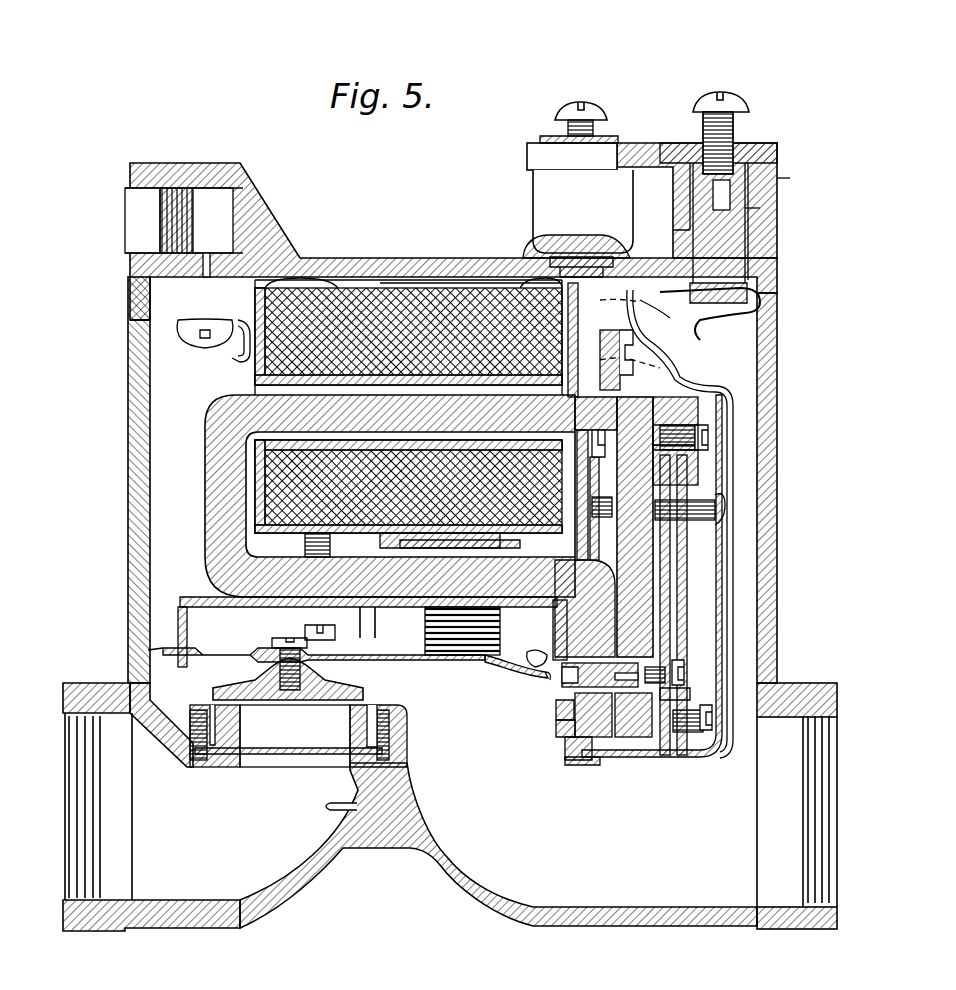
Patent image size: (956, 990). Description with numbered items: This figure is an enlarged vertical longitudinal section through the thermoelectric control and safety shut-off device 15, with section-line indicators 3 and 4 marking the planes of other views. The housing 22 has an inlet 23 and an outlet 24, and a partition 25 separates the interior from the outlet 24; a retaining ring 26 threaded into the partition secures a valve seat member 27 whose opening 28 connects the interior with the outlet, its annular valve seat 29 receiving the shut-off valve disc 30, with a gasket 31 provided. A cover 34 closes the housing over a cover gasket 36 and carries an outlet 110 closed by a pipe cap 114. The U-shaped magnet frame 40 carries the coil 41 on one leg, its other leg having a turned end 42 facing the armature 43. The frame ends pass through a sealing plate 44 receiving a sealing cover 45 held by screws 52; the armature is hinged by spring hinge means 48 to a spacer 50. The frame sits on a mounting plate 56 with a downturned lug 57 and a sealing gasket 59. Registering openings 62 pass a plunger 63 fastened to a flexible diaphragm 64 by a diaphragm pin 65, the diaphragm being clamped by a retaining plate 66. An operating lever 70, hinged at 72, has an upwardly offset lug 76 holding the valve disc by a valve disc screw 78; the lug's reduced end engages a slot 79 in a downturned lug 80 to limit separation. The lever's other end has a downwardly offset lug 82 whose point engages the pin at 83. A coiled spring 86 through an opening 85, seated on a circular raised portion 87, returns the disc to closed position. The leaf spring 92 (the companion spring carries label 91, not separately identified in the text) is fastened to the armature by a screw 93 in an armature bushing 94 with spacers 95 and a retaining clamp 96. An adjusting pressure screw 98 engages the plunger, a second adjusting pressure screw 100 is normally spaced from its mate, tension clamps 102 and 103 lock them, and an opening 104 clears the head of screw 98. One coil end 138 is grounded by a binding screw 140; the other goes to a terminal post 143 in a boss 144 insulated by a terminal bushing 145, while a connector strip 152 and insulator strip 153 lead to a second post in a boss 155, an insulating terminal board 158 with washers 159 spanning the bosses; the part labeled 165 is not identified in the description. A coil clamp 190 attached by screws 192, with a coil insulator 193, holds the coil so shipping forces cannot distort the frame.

The section line 3- 3 is at (700, 770).
The section line 4- 4 is at (575, 22).
The thermoelectric control and safety shut-off device 15 is at (128, 410).
The housing 22 is at (128, 530).
The inlet 23 is at (790, 708).
The outlet 24 is at (105, 925).
The partition 25 is at (165, 738).
The retaining ring 26 is at (185, 768).
The valve seat member 27 is at (375, 718).
The opening 28 is at (262, 778).
The annular valve seat 29 is at (236, 712).
The shut-off valve disc 30 is at (250, 682).
The gasket 31 is at (405, 768).
The cover 34 is at (312, 268).
The cover gasket 36 is at (128, 312).
The magnet frame 40 is at (212, 452).
The coil 41 is at (270, 505).
The turned end of magnet frame 42 is at (685, 328).
The armature 43 is at (655, 540).
The sealing plate 44 is at (622, 302).
The sealing cover 45 is at (685, 380).
The hinge means 48 is at (622, 382).
The spacer 50 is at (668, 318).
The screws 52 is at (712, 498).
The mounting plate 56 is at (203, 598).
The downturned lug 57 is at (575, 766).
The sealing gasket 59 is at (615, 758).
The registering openings 62 is at (630, 655).
The plunger 63 is at (556, 712).
The flexible diaphragm 64 is at (556, 728).
The diaphragm pin 65 is at (560, 690).
The retaining plate 66 is at (566, 748).
The operating lever 70 is at (378, 640).
The hinge 72 is at (535, 650).
The lug 76 is at (275, 641).
The valve disc screw 78 is at (303, 662).
The slot 79 is at (178, 628).
The downturned lug 80 is at (160, 652).
The downwardly offset lug 82 is at (520, 668).
The pointed engagement 83 is at (540, 676).
The opening 85 is at (380, 607).
The coiled spring 86 is at (424, 628).
The circular raised portion 87 is at (450, 660).
The contact strip 91 is at (683, 584).
The leaf spring 92 is at (688, 605).
The screw 93 is at (710, 438).
The armature bushing 94 is at (700, 468).
The spacers 95 is at (700, 398).
The retaining clamp 96 is at (698, 422).
The adjusting pressure screw 98 is at (688, 675).
The second adjusting pressure screw 100 is at (718, 722).
The tension clamp 102 is at (685, 695).
The tension clamp 103 is at (698, 733).
The opening 104 is at (682, 668).
The outlet 110 is at (230, 180).
The pipe cap 114 is at (137, 205).
The coil end 138 is at (238, 357).
The binding screw 140 is at (198, 342).
The terminal post 143 is at (762, 208).
The boss 144 is at (777, 180).
The terminal bushing 145 is at (748, 235).
The connector strip 152 is at (545, 270).
The insulator strip 153 is at (583, 256).
The boss 155 is at (545, 190).
The insulating terminal board 158 is at (640, 150).
The washers 159 is at (545, 138).
The terminal screw 165 is at (585, 112).
The coil clamp 190 is at (402, 543).
The screws 192 is at (440, 285).
The coil insulator 193 is at (508, 540).